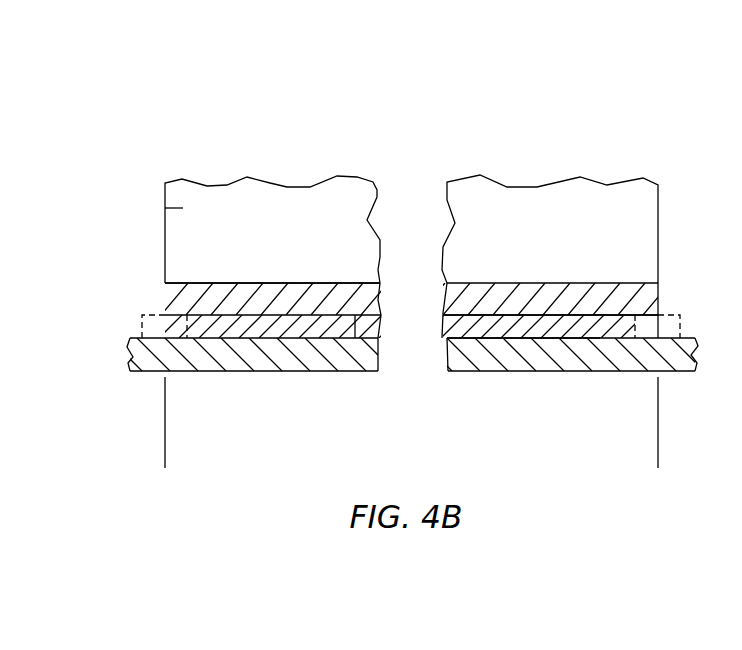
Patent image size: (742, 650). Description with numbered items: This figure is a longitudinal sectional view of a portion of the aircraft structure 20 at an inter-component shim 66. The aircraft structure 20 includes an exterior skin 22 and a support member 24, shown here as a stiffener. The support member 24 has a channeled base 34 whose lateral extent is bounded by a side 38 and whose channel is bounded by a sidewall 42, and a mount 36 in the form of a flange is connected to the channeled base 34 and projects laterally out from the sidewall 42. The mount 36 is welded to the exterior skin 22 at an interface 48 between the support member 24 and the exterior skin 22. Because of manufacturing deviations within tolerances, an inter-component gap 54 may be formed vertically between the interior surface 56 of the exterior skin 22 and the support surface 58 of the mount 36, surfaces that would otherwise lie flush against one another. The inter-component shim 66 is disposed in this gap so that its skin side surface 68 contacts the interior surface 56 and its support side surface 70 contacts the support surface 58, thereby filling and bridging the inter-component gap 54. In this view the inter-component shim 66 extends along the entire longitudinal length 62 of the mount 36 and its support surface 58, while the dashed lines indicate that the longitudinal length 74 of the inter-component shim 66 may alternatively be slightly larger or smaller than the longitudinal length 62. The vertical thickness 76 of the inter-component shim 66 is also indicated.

The aircraft structure 20 is at (600, 107).
The exterior skin 22 is at (411, 404).
The support member 24 is at (214, 216).
The channeled base 34 is at (524, 184).
The mount 36 is at (193, 272).
The side of the channeled base 38 is at (115, 191).
The sidewall 42 is at (183, 208).
The interface 48 is at (682, 327).
The inter-component gap 54 is at (293, 313).
The interior surface 56 is at (483, 338).
The support surface 58 is at (483, 338).
The longitudinal length 62 is at (411, 425).
The inter-component shim 66 is at (262, 342).
The skin side surface 68 is at (522, 338).
The support side surface 70 is at (522, 338).
The longitudinal length 74 is at (165, 457).
The vertical thickness 76 is at (355, 250).